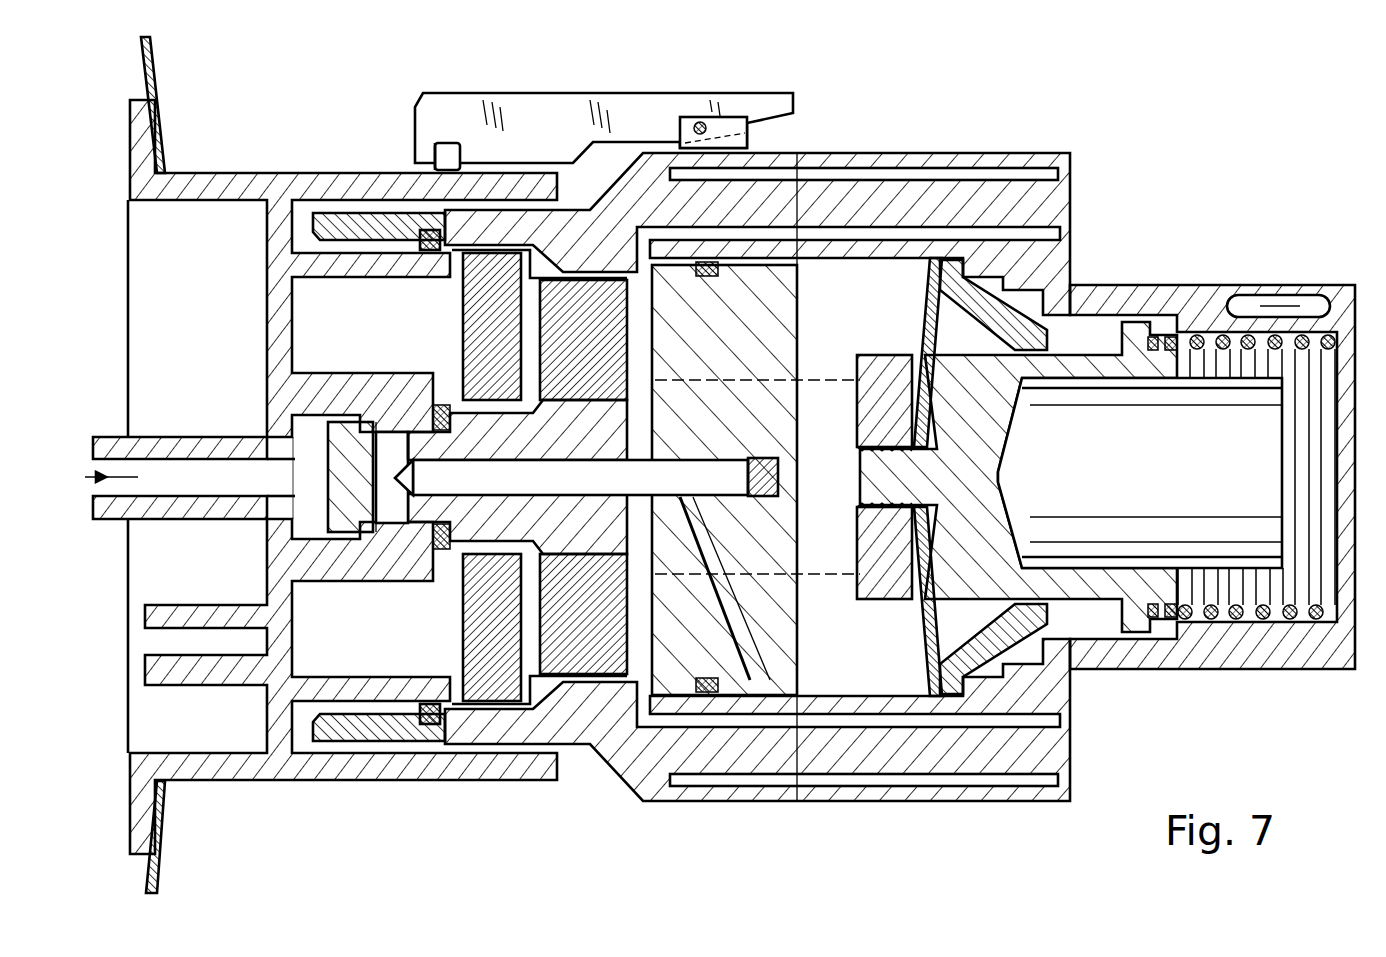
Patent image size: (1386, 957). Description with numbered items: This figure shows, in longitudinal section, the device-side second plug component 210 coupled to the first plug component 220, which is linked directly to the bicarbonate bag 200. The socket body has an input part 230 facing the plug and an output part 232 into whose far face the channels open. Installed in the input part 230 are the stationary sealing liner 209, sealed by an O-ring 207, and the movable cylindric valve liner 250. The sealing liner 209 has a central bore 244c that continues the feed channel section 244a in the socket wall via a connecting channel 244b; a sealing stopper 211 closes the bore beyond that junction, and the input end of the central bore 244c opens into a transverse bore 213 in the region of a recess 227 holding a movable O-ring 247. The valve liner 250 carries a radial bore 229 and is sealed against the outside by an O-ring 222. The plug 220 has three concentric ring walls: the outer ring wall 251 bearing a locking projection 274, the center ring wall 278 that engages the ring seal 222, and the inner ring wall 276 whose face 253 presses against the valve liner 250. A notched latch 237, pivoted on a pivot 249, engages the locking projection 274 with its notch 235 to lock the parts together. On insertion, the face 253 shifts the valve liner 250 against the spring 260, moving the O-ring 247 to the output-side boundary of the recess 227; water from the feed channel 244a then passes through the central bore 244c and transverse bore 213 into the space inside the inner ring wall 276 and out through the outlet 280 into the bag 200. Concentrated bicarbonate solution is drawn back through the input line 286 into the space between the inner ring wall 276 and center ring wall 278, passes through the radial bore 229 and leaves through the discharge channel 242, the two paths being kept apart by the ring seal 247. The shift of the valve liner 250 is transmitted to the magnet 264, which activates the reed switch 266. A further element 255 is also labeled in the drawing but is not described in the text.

The bicarbonate bag 200 is at (160, 64).
The O-ring 207 is at (707, 700).
The sealing liner 209 is at (773, 343).
The second plug component 210 is at (1005, 130).
The sealing stopper 211 is at (752, 477).
The transverse bore 213 is at (388, 510).
The first plug component 220 is at (207, 165).
The O-ring 222 is at (430, 723).
The recess 227 is at (362, 428).
The radial bore 229 is at (548, 680).
The input part 230 is at (645, 808).
The output part 232 is at (856, 812).
The notch 235 is at (449, 138).
The notched latch 237 is at (500, 88).
The channel 242 is at (1050, 233).
The channel section 244a is at (1050, 722).
The connecting channel 244b is at (740, 745).
The central bore 244c is at (575, 494).
The O-ring 247 is at (440, 405).
The pivot 249 is at (697, 122).
The valve liner 250 is at (500, 663).
The outer ring wall 251 is at (490, 763).
The face 253 is at (425, 560).
The chamber 255 is at (305, 447).
The spring 260 is at (1187, 335).
The magnet 264 is at (1228, 548).
The reed switch 266 is at (1275, 305).
The locking projection 274 is at (440, 157).
The inner ring wall 276 is at (360, 545).
The center ring wall 278 is at (392, 688).
The outlet 280 is at (215, 490).
The input line 286 is at (215, 640).